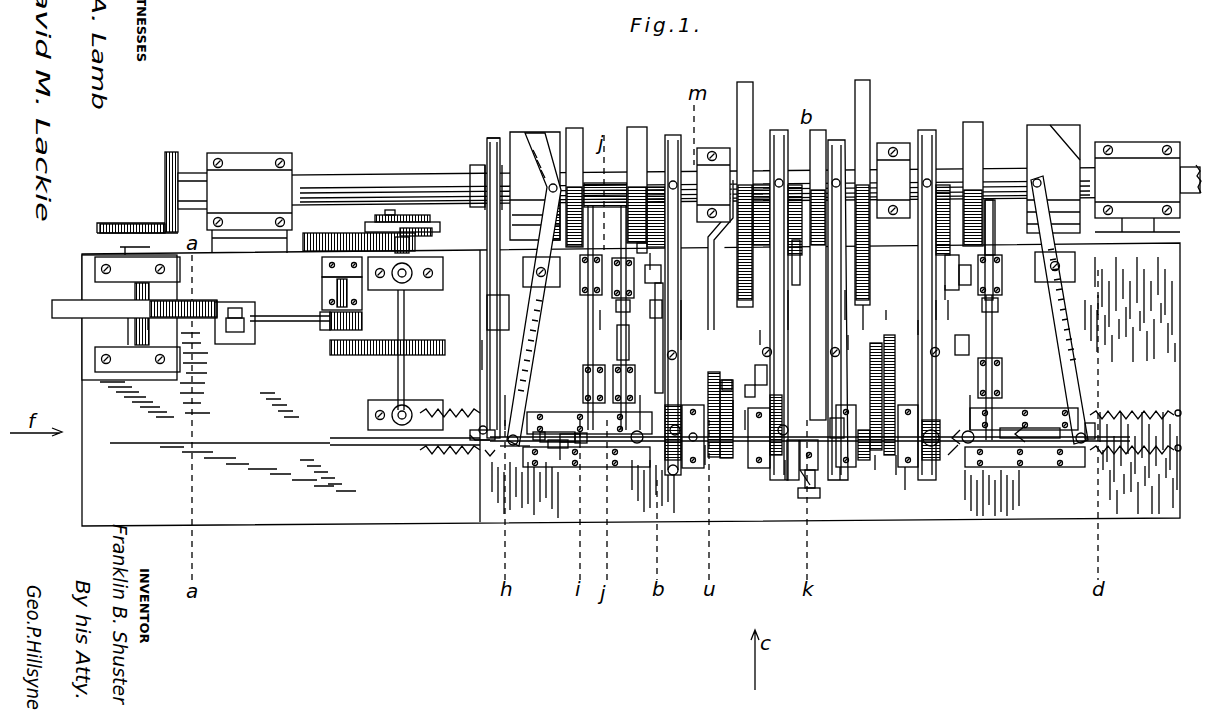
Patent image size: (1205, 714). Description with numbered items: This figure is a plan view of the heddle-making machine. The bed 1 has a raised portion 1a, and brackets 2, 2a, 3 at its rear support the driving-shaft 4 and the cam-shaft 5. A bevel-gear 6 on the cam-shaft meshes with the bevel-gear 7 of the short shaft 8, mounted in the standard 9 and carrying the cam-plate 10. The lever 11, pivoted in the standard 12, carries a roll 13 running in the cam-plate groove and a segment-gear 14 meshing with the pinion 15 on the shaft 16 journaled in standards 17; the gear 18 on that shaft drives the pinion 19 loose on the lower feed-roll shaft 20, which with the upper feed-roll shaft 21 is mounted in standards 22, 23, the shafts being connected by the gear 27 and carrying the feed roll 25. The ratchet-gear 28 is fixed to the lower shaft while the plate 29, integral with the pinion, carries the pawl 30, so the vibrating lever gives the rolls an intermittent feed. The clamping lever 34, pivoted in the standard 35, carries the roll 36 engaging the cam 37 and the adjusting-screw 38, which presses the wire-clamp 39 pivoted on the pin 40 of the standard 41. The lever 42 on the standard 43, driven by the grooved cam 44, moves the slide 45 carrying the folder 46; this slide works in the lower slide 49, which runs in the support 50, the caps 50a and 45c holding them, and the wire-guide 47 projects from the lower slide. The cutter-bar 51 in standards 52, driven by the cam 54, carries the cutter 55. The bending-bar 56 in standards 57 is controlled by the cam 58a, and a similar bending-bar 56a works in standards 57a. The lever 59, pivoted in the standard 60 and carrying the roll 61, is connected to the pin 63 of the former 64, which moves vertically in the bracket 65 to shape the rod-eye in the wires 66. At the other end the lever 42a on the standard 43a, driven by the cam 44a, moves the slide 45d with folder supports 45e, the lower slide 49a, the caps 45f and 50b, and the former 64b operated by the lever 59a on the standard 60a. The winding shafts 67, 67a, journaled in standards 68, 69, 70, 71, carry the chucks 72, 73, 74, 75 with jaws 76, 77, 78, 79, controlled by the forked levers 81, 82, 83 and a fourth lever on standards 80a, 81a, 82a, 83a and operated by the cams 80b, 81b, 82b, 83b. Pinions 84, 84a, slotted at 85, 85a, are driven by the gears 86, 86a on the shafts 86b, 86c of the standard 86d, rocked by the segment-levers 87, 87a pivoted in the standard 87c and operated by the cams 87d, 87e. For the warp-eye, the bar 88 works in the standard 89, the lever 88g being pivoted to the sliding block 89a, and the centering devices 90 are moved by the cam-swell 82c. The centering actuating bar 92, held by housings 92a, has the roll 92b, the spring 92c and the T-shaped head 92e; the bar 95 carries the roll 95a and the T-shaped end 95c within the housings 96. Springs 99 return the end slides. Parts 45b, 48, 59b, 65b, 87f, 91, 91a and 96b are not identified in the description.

The bed 1 is at (631, 384).
The raised portion of the bed 1a is at (816, 386).
The bracket 2 is at (249, 203).
The bracket 2a is at (713, 185).
The bracket 3 is at (1137, 187).
The driving-shaft 4 is at (1190, 188).
The cam-shaft 5 is at (1178, 135).
The bevel-gear 6 is at (165, 161).
The bevel-gear 7 is at (128, 224).
The short shaft 8 is at (135, 341).
The standard 9 is at (95, 273).
The cam-plate 10 is at (134, 309).
The lever 11 is at (290, 311).
The standard 12 is at (233, 303).
The roll 13 is at (128, 322).
The segment-gear 14 is at (320, 317).
The pinion 15 is at (362, 318).
The short shaft 16 is at (338, 286).
The standards 17 is at (322, 264).
The gear 18 is at (314, 233).
The pinion 19 is at (410, 236).
The lower feed-roll shaft 20 is at (408, 246).
The upper feed-roll shaft 21 is at (398, 362).
The standard 22 is at (382, 282).
The standard 23 is at (378, 404).
The wire-feed roll 25 is at (403, 434).
The gear 27 is at (336, 348).
The ratchet-gear 28 is at (401, 209).
The plate 29 is at (374, 222).
The pawl 30 is at (396, 215).
The lever 34 is at (485, 360).
The standard 35 is at (487, 304).
The roll 36 is at (470, 186).
The cam 37 is at (490, 138).
The adjusting-screw 38 is at (508, 410).
The wire-clamp 39 is at (470, 430).
The pin 40 is at (484, 419).
The standard 41 is at (482, 452).
The lever 42 is at (534, 289).
The lever 42a is at (1062, 310).
The standard 43 is at (523, 272).
The standard 43a is at (1075, 262).
The grooved cam 44 is at (535, 185).
The cam 44a is at (1053, 179).
The slide 45 is at (482, 440).
The slide 45b is at (544, 432).
The caps 45c is at (558, 440).
The slide 45d is at (1095, 430).
The supports 45e is at (524, 447).
The caps 45f is at (1028, 428).
The folder 46 is at (1053, 410).
The wire-guide 47 is at (562, 455).
The block 48 is at (540, 446).
The lower slide 49 is at (582, 444).
The lower slide 49a is at (1018, 431).
The support 50 is at (565, 434).
The caps 50a is at (545, 467).
The caps 50b is at (1000, 409).
The cutter-bar 51 is at (588, 336).
The standards 52 is at (580, 273).
The cam 54 is at (574, 130).
The cutter 55 is at (589, 416).
The bending-bar 56 is at (617, 354).
The bending-bar 56a is at (999, 227).
The standards 57 is at (623, 330).
The standards 57a is at (1002, 262).
The cam 58a is at (630, 177).
The lever 59 is at (620, 336).
The operating-lever 59a is at (986, 337).
The cam 59b is at (968, 176).
The standard 60 is at (616, 308).
The standard 60a is at (998, 303).
The roll 61 is at (586, 320).
The pin 63 is at (634, 445).
The former 64 is at (810, 443).
The former 64b is at (966, 432).
The bracket 65 is at (650, 412).
The arm 65b is at (975, 423).
The wires 66 is at (950, 427).
The winding shaft 67 is at (707, 464).
The winding shaft 67a is at (868, 472).
The standard 68 is at (689, 446).
The standard 69 is at (747, 446).
The standard 70 is at (849, 442).
The standard 71 is at (911, 488).
The wire-holding chuck 72 is at (675, 460).
The wire-holding chuck 73 is at (787, 452).
The wire-holding chuck 74 is at (819, 501).
The wire-holding chuck 75 is at (930, 458).
The jaws 76 is at (693, 432).
The jaws 77 is at (768, 438).
The jaws 78 is at (844, 480).
The jaws 79 is at (934, 447).
The standard 80a is at (693, 320).
The cam 80b is at (669, 295).
The forked lever 81 is at (775, 310).
The standard 81a is at (749, 331).
The cam 81b is at (781, 295).
The forked lever 82 is at (836, 305).
The standard 82a is at (861, 331).
The cam 82b is at (834, 140).
The cam-swell 82c is at (810, 130).
The forked lever 83 is at (937, 307).
The standard 83a is at (912, 324).
The cam 83b is at (931, 293).
The pinion 84 is at (715, 457).
The pinion 84a is at (873, 451).
The slot 85 is at (730, 441).
The slot 85a is at (888, 477).
The gear 86 is at (712, 352).
The gear 86a is at (823, 395).
The shaft 86b is at (804, 400).
The shaft 86c is at (769, 354).
The standard 86d is at (759, 392).
The segment-lever 87 is at (744, 247).
The segment-lever 87a is at (899, 307).
The standard 87c is at (873, 309).
The cam 87d is at (737, 92).
The cam 87e is at (866, 184).
The cam arm 87f is at (708, 266).
The bar 88 is at (800, 473).
The lever 88g is at (779, 490).
The standard 89 is at (948, 292).
The sliding block 89a is at (785, 475).
The wire-centering devices 90 is at (668, 338).
The rod 91 is at (791, 262).
The rod 91a is at (805, 504).
The bar 92 is at (650, 252).
The housings 92a is at (646, 207).
The roll 92b is at (638, 244).
The retractile spring 92c is at (647, 277).
The T-shaped head 92e is at (662, 305).
The bar 95 is at (968, 268).
The roll 95a is at (945, 262).
The T-shaped end 95c is at (969, 347).
The housings 96 is at (945, 276).
The bar 96b is at (985, 200).
The retractile springs 99 is at (800, 456).